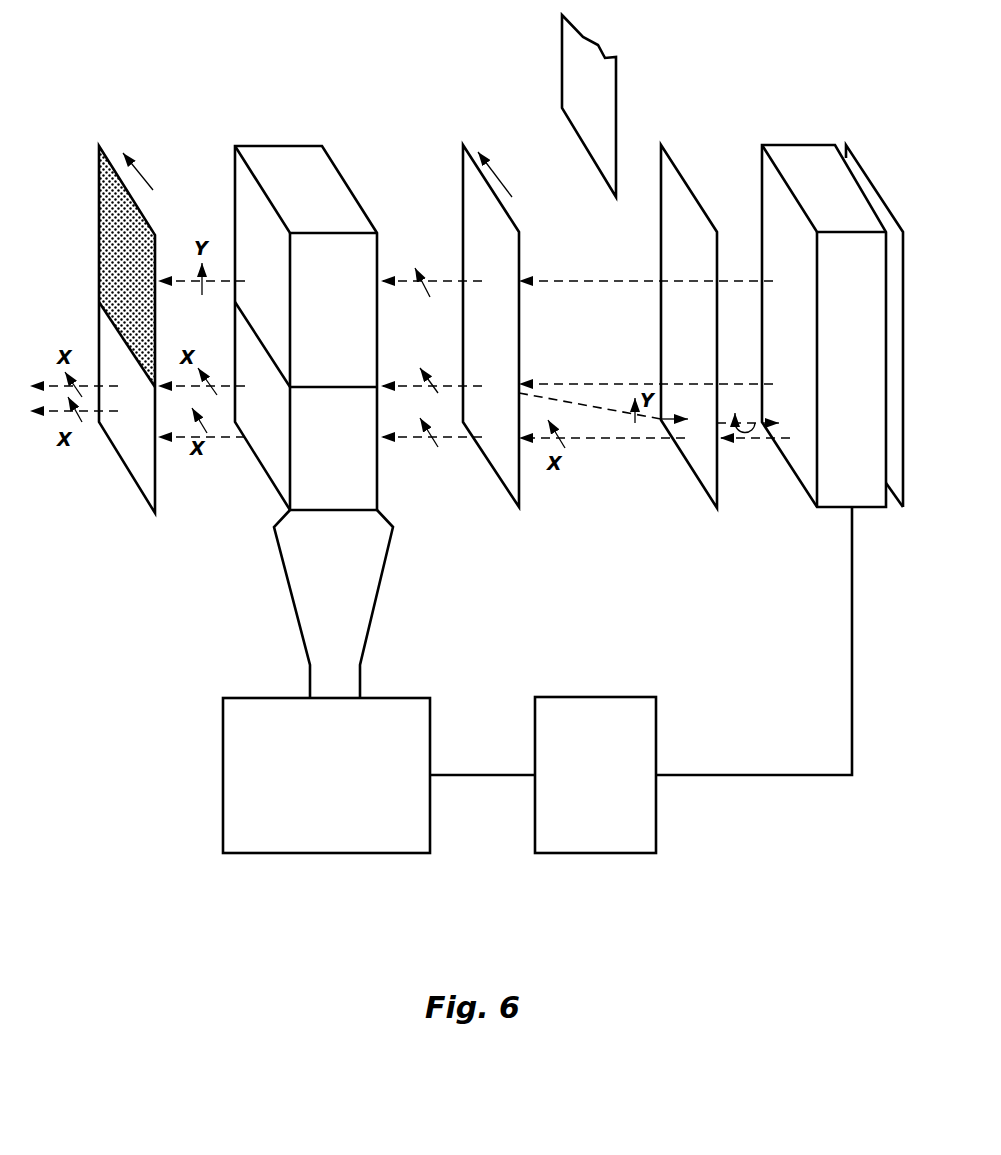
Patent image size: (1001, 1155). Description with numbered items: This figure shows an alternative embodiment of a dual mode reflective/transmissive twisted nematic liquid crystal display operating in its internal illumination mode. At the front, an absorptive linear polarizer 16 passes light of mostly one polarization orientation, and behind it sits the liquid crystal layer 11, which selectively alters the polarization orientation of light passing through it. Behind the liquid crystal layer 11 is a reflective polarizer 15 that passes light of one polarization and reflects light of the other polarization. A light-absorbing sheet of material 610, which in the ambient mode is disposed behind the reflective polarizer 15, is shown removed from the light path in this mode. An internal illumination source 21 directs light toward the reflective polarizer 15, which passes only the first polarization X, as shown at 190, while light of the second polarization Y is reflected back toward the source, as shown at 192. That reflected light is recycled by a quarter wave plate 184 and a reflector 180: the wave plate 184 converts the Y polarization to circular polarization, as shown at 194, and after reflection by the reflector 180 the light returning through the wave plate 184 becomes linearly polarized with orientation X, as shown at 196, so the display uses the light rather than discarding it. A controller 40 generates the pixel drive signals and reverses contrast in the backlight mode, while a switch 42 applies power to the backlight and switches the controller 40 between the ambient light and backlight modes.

The liquid crystal layer 11 is at (302, 165).
The reflective polarizer 15 is at (520, 508).
The absorptive linear polarizer 16 is at (155, 513).
The illumination source 21 is at (873, 507).
The controller 40 is at (430, 853).
The switch 42 is at (656, 835).
The reflector 180 is at (876, 190).
The quarter wave plate 184 is at (684, 173).
The first polarization X light 190 is at (448, 280).
The reflected second polarization Y light 192 is at (588, 405).
The circularly polarized light 194 is at (742, 428).
The recycled X polarization light 196 is at (633, 438).
The sheet of material 610 is at (616, 107).